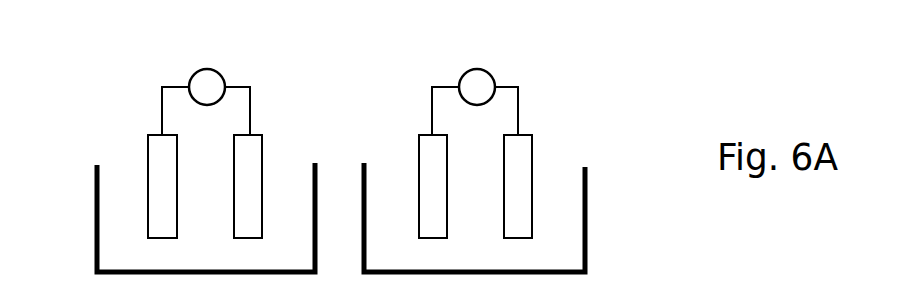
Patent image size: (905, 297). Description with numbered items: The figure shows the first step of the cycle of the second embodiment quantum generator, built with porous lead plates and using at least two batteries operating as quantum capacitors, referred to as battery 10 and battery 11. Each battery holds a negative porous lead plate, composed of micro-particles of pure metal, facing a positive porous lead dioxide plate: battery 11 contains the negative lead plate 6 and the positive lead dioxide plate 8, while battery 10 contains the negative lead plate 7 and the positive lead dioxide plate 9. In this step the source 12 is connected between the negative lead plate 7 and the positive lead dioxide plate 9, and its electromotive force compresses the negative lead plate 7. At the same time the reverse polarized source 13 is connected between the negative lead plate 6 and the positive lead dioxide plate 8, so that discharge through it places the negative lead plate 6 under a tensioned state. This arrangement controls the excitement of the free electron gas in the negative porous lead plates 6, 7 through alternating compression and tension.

The negative porous lead plate 6 is at (263, 153).
The negative porous lead plate 7 is at (448, 157).
The positive lead dioxide plate 8 is at (178, 157).
The positive lead dioxide plate 9 is at (533, 155).
The battery 10 is at (587, 217).
The battery 11 is at (97, 217).
The source 12 is at (487, 66).
The reverse polarized source 13 is at (218, 66).